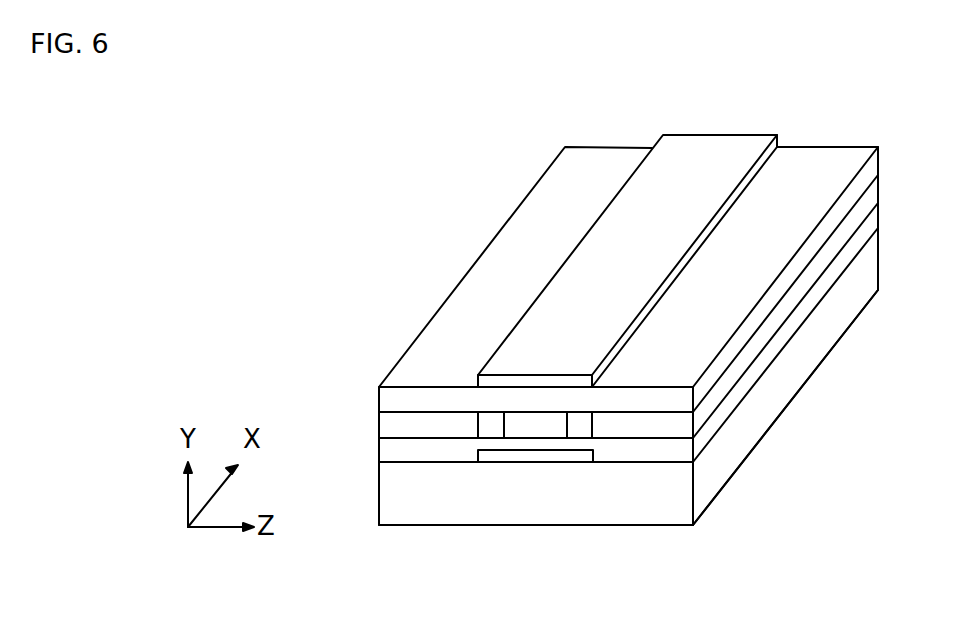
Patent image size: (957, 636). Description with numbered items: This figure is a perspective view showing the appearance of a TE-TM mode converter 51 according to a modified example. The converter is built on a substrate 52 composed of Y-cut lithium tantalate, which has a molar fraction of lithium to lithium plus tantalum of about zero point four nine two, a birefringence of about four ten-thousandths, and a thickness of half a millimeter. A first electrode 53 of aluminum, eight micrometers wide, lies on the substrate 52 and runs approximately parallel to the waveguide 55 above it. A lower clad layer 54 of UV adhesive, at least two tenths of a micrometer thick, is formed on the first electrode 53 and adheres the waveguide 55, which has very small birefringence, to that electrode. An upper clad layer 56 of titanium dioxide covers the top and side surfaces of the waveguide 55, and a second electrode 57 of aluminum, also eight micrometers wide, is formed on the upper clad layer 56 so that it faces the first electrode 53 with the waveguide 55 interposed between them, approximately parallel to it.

The TE-TM mode converter 51 is at (373, 123).
The substrate 52 is at (450, 512).
The first electrode 53 is at (495, 457).
The lower clad layer 54 is at (527, 445).
The waveguide 55 is at (533, 425).
The upper clad layer 56 is at (563, 182).
The second electrode 57 is at (702, 157).